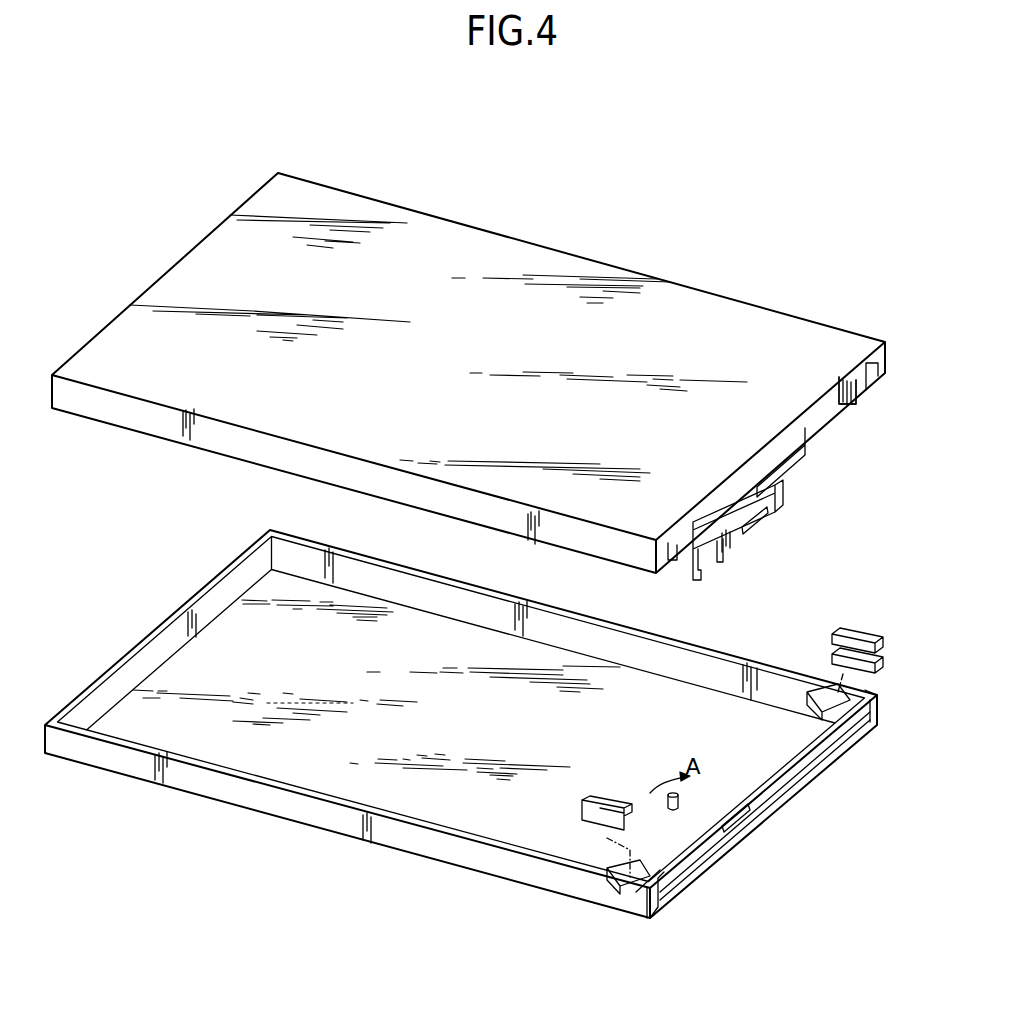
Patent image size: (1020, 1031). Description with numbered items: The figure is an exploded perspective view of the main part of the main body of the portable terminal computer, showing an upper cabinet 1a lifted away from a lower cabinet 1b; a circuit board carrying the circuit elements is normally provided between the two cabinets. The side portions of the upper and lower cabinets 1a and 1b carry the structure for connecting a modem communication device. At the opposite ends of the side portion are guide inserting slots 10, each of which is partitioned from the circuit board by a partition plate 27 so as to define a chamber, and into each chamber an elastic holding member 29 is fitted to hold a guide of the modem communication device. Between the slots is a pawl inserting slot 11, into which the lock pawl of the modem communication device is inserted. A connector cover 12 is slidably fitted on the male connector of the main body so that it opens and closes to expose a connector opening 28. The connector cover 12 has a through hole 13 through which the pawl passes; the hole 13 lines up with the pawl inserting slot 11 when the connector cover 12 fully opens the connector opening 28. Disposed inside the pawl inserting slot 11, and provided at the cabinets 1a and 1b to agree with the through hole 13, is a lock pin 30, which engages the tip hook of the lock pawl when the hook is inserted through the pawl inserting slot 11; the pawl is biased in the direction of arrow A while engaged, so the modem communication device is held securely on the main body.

The upper cabinet 1a is at (545, 243).
The lower cabinet 1b is at (309, 826).
The guide inserting slot 10 is at (877, 727).
The pawl inserting slot 11 is at (742, 828).
The connector cover 12 is at (779, 494).
The through hole 13 is at (768, 520).
The partition plate 27 is at (808, 719).
The connector opening 28 is at (819, 418).
The elastic holding member 29 is at (842, 627).
The lock pin 30 is at (680, 798).